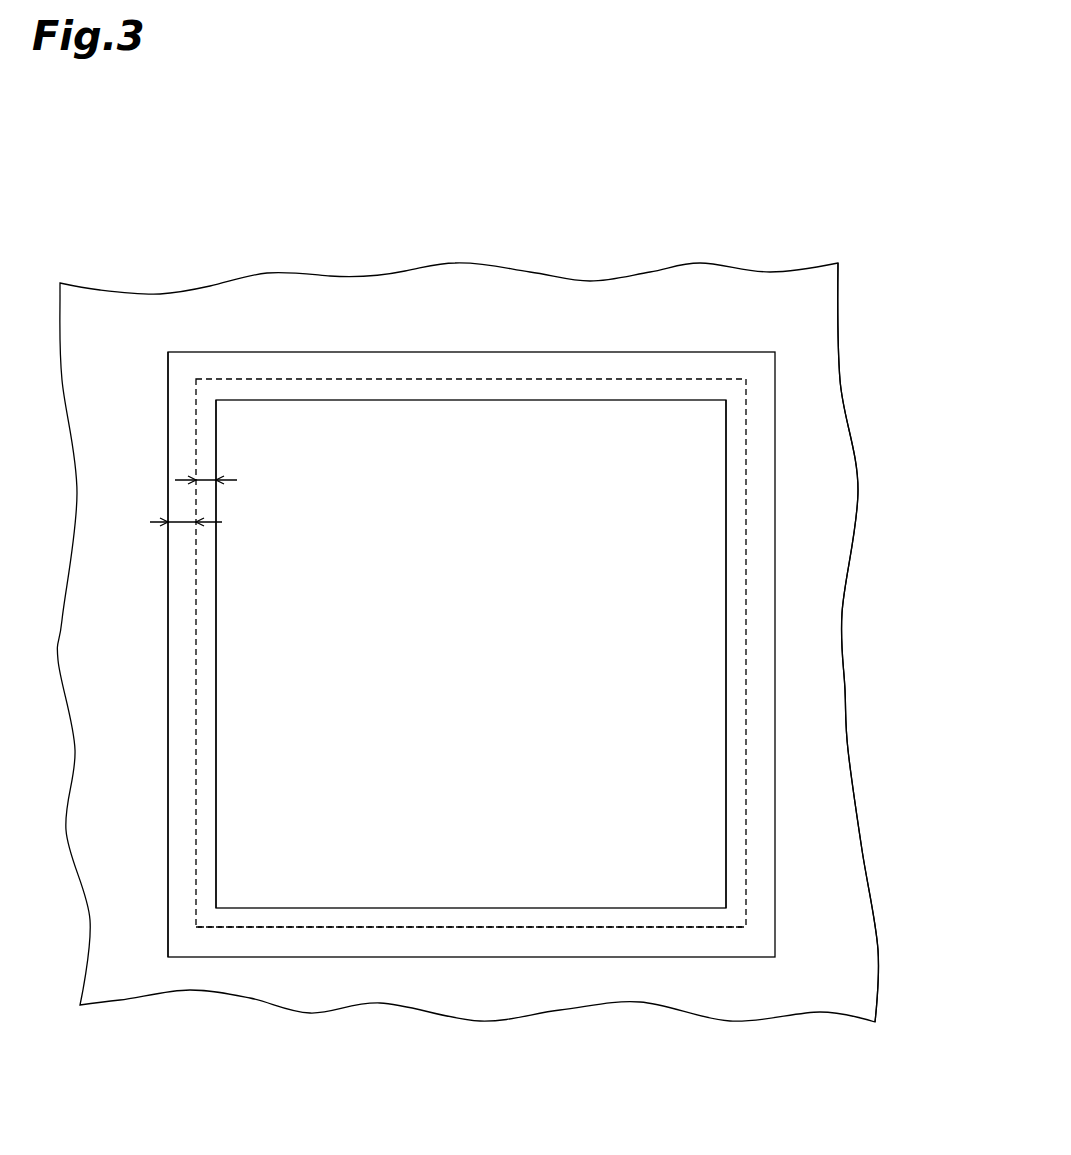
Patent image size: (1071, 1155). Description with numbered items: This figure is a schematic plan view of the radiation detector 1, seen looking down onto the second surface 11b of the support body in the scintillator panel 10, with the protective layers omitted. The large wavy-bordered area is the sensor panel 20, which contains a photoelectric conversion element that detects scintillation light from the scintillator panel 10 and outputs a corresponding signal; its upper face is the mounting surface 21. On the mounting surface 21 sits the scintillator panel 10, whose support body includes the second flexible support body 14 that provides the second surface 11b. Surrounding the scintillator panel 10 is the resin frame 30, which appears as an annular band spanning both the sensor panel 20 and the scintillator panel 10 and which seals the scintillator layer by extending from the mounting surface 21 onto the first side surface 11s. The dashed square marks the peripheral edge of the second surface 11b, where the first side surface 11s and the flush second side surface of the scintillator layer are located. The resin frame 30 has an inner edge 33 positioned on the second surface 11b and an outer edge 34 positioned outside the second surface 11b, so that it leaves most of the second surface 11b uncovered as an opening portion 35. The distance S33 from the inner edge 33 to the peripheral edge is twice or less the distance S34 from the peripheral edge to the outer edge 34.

The radiation detector 1 is at (644, 171).
The scintillator panel 10 is at (188, 350).
The second surface 11b is at (431, 455).
The first side surface 11s is at (277, 921).
The second flexible support body 14 is at (693, 657).
The sensor panel 20 is at (779, 272).
The mounting surface 21 is at (815, 410).
The resin frame 30 is at (277, 377).
The inner edge 33 is at (222, 674).
The outer edge 34 is at (166, 785).
The opening portion 35 is at (487, 632).
The distance from inner edge to peripheral edge S33 is at (207, 478).
The distance from peripheral edge to outer edge S34 is at (186, 526).